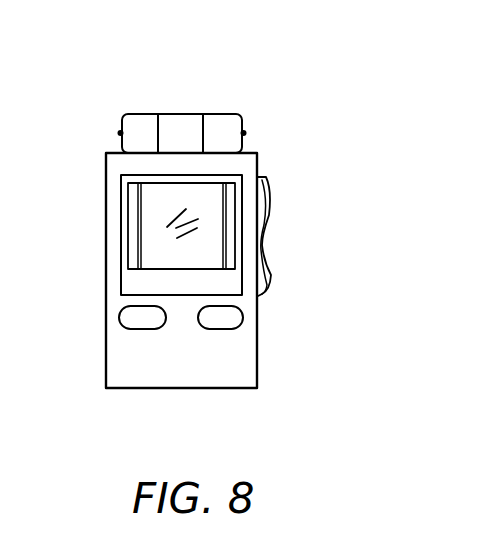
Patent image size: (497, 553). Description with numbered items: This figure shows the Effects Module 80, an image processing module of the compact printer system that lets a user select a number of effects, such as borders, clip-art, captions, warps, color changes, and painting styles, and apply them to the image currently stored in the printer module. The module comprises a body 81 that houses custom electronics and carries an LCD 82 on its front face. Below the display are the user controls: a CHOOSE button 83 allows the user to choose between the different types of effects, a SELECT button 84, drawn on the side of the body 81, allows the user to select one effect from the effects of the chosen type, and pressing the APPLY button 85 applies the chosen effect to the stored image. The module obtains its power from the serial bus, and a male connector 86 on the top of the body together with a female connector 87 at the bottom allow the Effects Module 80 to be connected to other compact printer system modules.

The portable device 80 is at (282, 92).
The body 81 is at (258, 358).
The LCD 82 is at (150, 222).
The CHOOSE button 83 is at (133, 318).
The SELECT button 84 is at (272, 187).
The APPLY button 85 is at (233, 318).
The male connector 86 is at (138, 114).
The female connector 87 is at (123, 389).